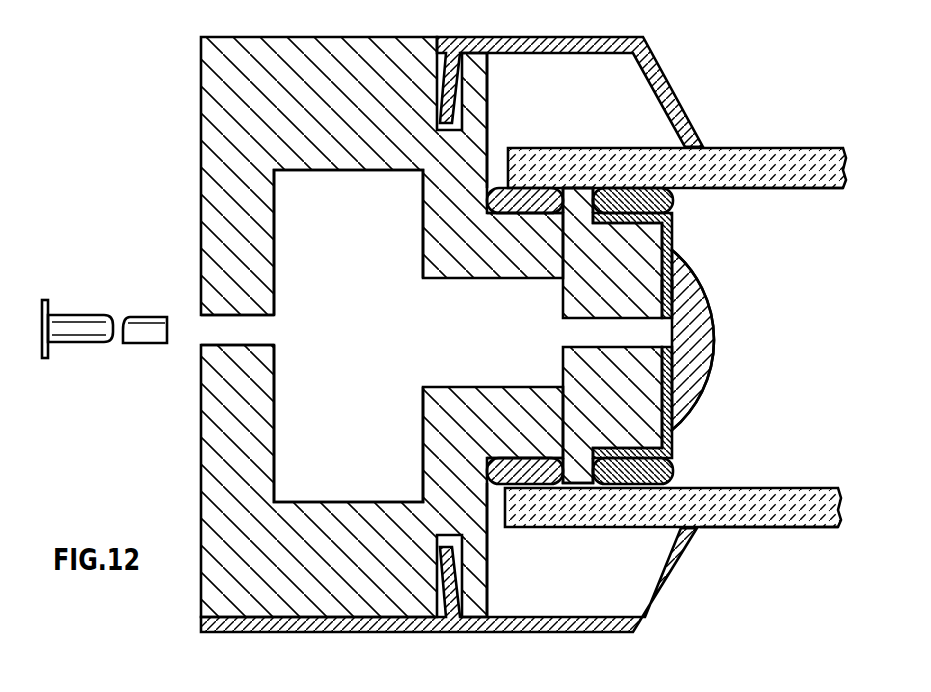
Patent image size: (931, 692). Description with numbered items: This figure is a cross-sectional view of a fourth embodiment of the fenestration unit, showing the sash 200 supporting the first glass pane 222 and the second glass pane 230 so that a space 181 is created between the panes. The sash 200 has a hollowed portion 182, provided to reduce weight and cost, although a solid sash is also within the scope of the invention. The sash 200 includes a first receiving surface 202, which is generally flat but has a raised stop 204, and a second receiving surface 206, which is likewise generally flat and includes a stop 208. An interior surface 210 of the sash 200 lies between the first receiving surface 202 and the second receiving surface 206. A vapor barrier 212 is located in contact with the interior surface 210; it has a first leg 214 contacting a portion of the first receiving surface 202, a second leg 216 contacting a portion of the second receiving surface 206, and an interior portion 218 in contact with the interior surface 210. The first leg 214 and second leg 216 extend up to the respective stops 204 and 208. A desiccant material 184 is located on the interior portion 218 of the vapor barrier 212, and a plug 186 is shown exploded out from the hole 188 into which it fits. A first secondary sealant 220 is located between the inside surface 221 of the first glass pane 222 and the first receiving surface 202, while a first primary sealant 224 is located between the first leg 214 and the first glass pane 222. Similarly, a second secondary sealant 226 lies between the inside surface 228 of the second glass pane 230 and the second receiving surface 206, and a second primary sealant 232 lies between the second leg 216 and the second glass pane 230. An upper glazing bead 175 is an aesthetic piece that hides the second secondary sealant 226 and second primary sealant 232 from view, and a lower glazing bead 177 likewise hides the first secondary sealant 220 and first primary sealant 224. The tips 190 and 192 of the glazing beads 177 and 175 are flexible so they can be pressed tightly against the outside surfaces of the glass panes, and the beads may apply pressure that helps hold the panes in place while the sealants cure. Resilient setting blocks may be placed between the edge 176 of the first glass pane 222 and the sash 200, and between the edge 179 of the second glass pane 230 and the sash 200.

The upper glazing bead 175 is at (570, 81).
The edge of the first glass pane 176 is at (503, 517).
The lower glazing bead 177 is at (636, 633).
The edge of the second glass pane 179 is at (498, 162).
The space 181 is at (778, 379).
The hollowed portion 182 is at (333, 236).
The desiccant material 184 is at (711, 335).
The plug 186 is at (85, 345).
The hole 188 is at (215, 330).
The tip of the lower glazing bead 190 is at (695, 528).
The tip of the upper glazing bead 192 is at (704, 146).
The sash 200 is at (335, 47).
The first receiving surface 202 is at (480, 463).
The stop 204 is at (578, 483).
The second receiving surface 206 is at (487, 200).
The stop 208 is at (578, 200).
The interior surface 210 is at (670, 290).
The vapor barrier 212 is at (672, 250).
The first leg 214 is at (628, 448).
The second leg 216 is at (633, 225).
The interior portion 218 is at (663, 374).
The first secondary sealant 220 is at (545, 462).
The inside surface of the first glass pane 221 is at (787, 488).
The first glass pane 222 is at (808, 527).
The first primary sealant 224 is at (668, 470).
The second secondary sealant 226 is at (519, 212).
The inside surface of the second glass pane 228 is at (793, 190).
The second glass pane 230 is at (806, 163).
The second primary sealant 232 is at (672, 198).